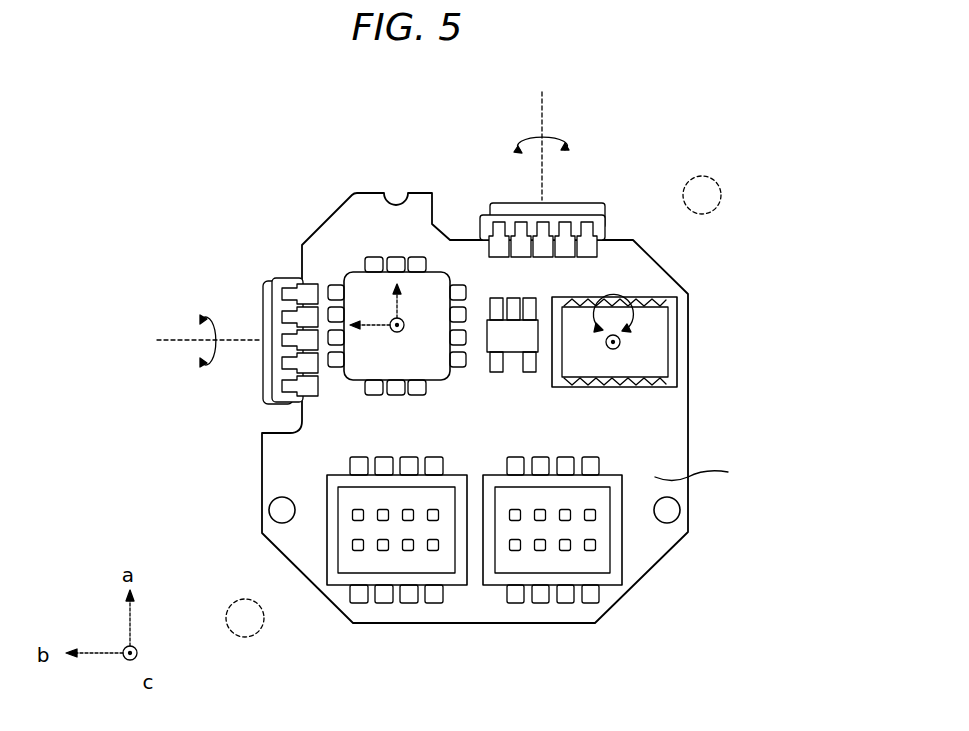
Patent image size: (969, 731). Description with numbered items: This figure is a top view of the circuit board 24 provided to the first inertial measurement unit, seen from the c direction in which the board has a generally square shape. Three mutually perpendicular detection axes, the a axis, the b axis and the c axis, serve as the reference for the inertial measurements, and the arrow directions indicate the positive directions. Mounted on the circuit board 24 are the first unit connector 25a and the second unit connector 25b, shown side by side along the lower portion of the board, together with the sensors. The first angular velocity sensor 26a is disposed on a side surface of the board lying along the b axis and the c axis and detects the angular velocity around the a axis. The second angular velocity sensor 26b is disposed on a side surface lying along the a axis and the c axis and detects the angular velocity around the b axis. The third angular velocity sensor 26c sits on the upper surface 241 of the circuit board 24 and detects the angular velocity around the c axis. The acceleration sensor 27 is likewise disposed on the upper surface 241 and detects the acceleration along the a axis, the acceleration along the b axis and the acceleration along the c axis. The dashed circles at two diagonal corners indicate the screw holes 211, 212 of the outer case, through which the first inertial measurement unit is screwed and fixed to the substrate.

The circuit board 24 is at (672, 277).
The upper surface 241 is at (713, 474).
The first unit connector 25a is at (400, 552).
The second unit connector 25b is at (553, 553).
The first angular velocity sensor 26a is at (578, 216).
The second angular velocity sensor 26b is at (280, 307).
The third angular velocity sensor 26c is at (655, 327).
The acceleration sensor 27 is at (445, 278).
The screw hole 211 is at (241, 600).
The screw hole 212 is at (702, 176).